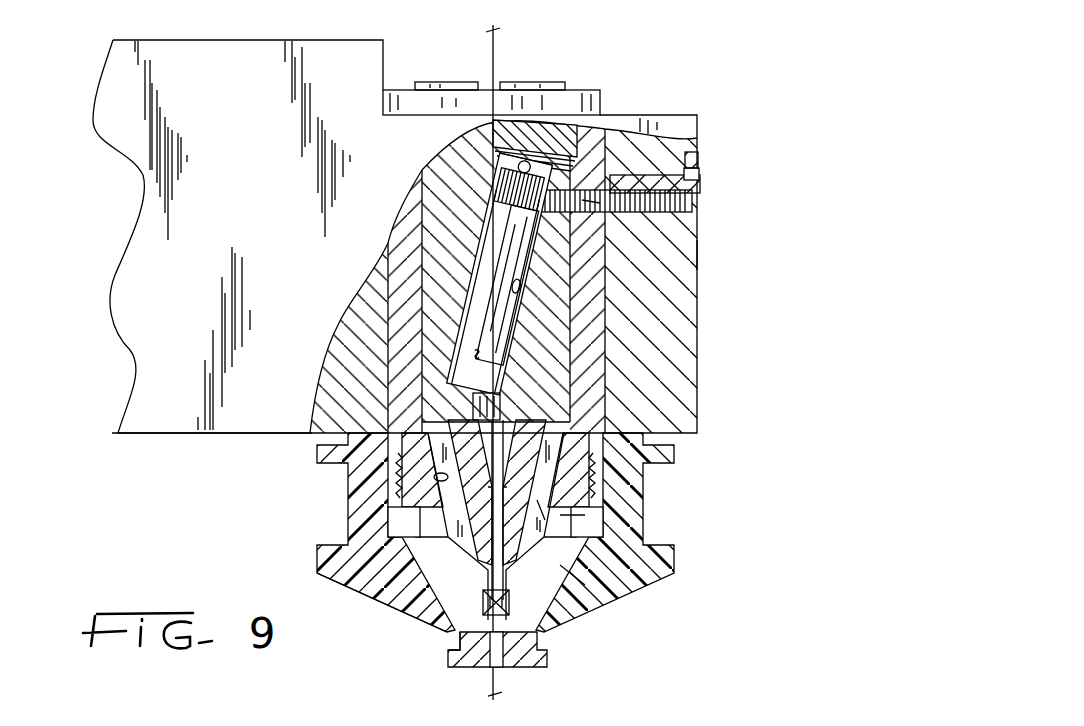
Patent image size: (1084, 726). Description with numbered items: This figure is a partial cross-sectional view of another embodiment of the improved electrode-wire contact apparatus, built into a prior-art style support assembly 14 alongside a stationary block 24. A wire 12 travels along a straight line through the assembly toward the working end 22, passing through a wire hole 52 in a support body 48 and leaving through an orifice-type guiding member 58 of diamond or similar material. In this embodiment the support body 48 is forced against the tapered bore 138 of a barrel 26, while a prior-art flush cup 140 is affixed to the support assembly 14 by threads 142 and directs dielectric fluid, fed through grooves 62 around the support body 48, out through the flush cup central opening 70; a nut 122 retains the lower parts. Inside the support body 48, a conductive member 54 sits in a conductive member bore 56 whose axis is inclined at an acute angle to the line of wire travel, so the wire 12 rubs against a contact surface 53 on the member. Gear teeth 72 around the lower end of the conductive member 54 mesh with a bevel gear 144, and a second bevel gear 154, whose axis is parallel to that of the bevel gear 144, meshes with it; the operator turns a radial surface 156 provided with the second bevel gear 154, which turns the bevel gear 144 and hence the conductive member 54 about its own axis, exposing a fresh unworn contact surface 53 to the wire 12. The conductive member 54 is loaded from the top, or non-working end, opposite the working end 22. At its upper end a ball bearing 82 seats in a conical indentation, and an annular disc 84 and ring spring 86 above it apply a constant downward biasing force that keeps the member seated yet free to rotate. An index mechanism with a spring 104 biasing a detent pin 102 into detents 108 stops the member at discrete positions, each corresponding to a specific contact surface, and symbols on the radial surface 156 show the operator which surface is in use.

The wire 12 is at (496, 58).
The support assembly 14 is at (704, 104).
The working end 22 is at (388, 612).
The manifold wall 24 is at (190, 238).
The barrel 26 is at (590, 385).
The support body 48 is at (520, 463).
The wire hole 52 is at (530, 545).
The contact surface 53 is at (408, 274).
The conductive member 54 is at (519, 278).
The conductive member bore 56 is at (625, 306).
The guiding member 58 is at (512, 606).
The grooves 62 is at (537, 500).
The flush cup central opening 70 is at (460, 646).
The gear teeth 72 is at (446, 191).
The ball bearing 82 is at (508, 150).
The annular disc 84 is at (505, 153).
The ring spring 86 is at (500, 112).
The detent pin 102 is at (697, 176).
The spring 104 is at (693, 156).
The detents 108 is at (700, 184).
The retaining nut 122 is at (547, 660).
The tapered bore 138 is at (434, 477).
The flush cup 140 is at (607, 587).
The threads 142 is at (592, 490).
The bevel gear 144 is at (580, 203).
The second bevel gear 154 is at (698, 254).
The radial surface 156 is at (692, 202).